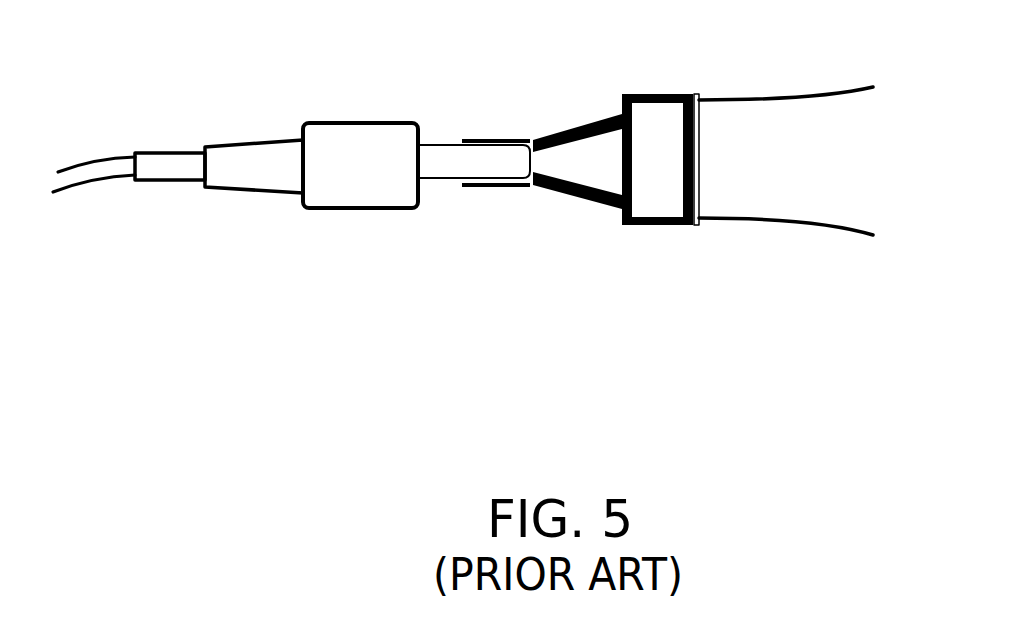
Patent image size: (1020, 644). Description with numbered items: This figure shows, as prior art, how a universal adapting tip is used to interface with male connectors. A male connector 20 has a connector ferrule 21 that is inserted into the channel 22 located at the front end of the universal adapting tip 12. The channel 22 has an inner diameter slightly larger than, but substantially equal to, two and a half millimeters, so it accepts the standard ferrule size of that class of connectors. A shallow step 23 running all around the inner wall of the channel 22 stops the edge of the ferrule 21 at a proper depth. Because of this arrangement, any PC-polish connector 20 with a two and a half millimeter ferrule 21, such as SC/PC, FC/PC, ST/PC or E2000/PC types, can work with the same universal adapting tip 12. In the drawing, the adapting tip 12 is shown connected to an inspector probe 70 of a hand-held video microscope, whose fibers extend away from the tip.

The male connector 20 is at (247, 216).
The connector ferrule 21 is at (455, 167).
The channel 22 is at (492, 138).
The shallow step 23 is at (543, 147).
The universal adapting tip 12 is at (638, 197).
The inspector probe 70 is at (763, 203).